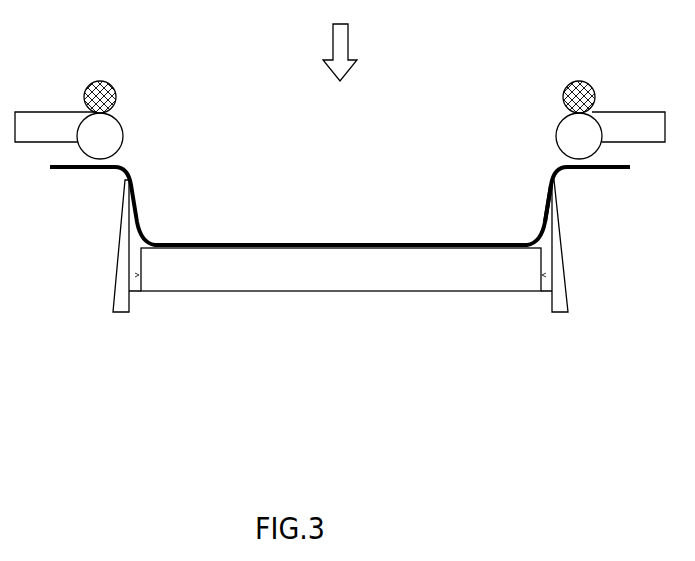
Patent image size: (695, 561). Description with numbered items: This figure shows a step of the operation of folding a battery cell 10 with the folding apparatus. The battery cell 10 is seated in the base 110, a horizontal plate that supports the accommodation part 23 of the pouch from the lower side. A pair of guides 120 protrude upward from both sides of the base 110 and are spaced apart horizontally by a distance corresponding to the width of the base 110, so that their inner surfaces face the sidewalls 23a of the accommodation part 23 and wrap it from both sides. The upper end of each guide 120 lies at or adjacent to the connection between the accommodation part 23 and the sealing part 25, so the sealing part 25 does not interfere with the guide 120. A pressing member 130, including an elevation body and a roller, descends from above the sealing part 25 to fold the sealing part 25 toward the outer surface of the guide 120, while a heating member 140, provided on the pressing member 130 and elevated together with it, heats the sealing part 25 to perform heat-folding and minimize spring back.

The battery cell 10 is at (402, 160).
The accommodation part 23 is at (413, 236).
The sidewall of the accommodation part 23a is at (541, 219).
The sealing part 25 is at (75, 170).
The base 110 is at (305, 292).
The guide 120 is at (118, 265).
The pressing member 130 is at (115, 128).
The heating member 140 is at (100, 81).